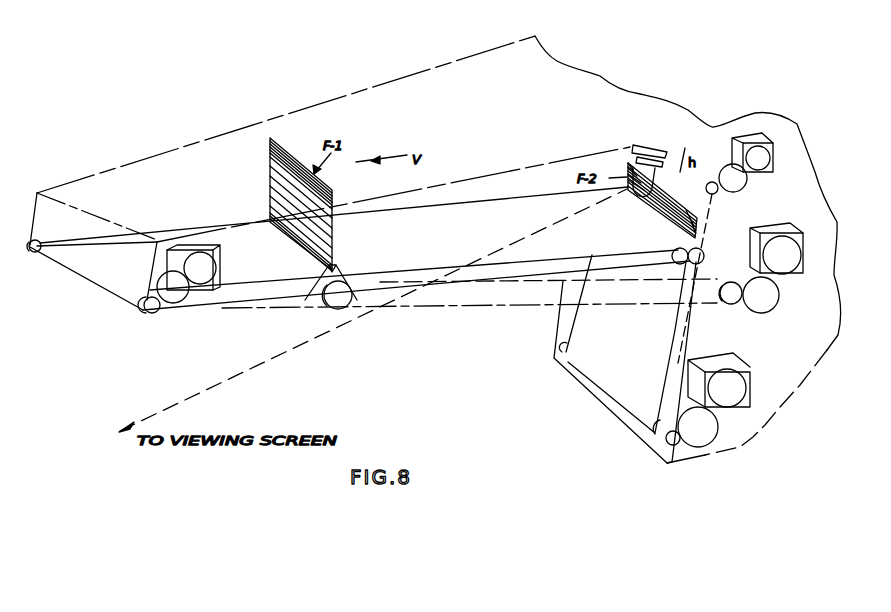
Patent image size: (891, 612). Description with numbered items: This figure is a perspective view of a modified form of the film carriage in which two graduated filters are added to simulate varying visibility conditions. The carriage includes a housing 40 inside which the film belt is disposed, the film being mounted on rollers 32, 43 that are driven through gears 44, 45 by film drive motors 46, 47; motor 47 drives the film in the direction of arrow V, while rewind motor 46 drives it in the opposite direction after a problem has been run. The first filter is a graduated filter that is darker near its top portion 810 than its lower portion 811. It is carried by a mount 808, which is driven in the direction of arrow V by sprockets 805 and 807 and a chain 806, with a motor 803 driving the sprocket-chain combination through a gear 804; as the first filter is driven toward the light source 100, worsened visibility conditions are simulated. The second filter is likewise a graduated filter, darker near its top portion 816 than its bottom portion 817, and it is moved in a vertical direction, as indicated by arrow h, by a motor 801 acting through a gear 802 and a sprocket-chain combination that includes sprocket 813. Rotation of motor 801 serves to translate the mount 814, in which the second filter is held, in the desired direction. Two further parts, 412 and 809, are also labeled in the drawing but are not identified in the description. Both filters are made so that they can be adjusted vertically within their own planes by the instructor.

The housing 40 is at (192, 200).
The roller 32 is at (152, 312).
The gear 44 is at (173, 303).
The rewind motor 46 is at (202, 283).
The top portion of filter F-1 810 is at (310, 138).
The lower portion of filter F-1 811 is at (293, 248).
The mount 808 is at (336, 271).
The sprocket 807 is at (334, 305).
The chain 806 is at (469, 321).
The light source 100 is at (648, 146).
The top portion of filter F-2 816 is at (627, 163).
The bottom portion of filter F-2 817 is at (645, 207).
The small roller 412 is at (711, 181).
The guide line 809 is at (701, 234).
The mount 814 is at (676, 250).
The sprocket 813 is at (686, 263).
The roller 43 is at (661, 453).
The gear 45 is at (702, 442).
The film drive motor 47 is at (735, 404).
The motor 801 is at (763, 159).
The gear 802 is at (738, 181).
The motor 803 is at (797, 262).
The gear 804 is at (768, 307).
The sprocket 805 is at (727, 302).